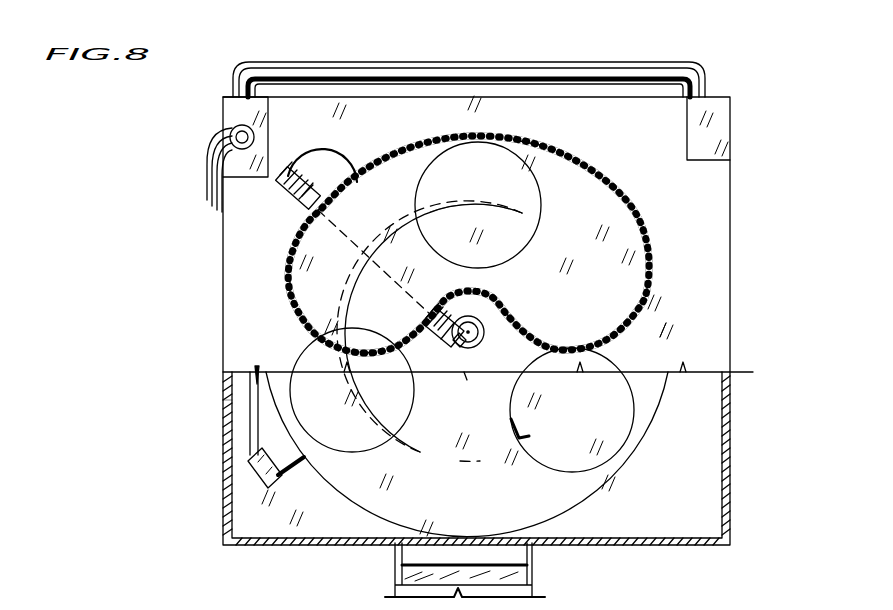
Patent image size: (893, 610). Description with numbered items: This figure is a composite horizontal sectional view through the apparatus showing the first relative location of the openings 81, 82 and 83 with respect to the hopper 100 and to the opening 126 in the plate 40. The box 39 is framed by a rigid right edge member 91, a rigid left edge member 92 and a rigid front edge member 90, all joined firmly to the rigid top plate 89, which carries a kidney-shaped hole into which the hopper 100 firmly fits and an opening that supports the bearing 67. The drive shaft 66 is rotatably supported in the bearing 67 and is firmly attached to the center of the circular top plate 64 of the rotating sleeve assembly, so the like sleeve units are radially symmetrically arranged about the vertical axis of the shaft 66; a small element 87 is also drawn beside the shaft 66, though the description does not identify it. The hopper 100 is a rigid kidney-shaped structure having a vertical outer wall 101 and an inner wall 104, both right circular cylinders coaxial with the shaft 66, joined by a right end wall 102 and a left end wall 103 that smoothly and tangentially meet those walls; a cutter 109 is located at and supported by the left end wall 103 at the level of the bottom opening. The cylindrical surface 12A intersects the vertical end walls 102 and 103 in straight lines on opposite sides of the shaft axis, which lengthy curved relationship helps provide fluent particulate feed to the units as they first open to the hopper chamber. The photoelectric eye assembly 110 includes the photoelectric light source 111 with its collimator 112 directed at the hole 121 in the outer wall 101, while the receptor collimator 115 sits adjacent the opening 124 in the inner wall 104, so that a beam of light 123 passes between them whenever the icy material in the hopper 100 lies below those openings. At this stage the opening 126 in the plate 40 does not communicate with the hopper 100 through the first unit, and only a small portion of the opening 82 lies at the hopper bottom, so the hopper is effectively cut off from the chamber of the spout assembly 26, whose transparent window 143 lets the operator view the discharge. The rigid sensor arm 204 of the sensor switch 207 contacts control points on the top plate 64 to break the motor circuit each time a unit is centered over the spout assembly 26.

The cylindrical surface 12A is at (461, 475).
The spout assembly 26 is at (383, 581).
The box 39 is at (205, 415).
The plate 40 is at (466, 199).
The top plate 64 is at (378, 262).
The drive shaft 66 is at (484, 332).
The bearing 67 is at (458, 348).
The orifice 81 is at (346, 310).
The orifice 82 is at (550, 337).
The orifice 83 is at (542, 220).
The block 87 is at (472, 368).
The top plate 89 is at (665, 264).
The front edge member 90 is at (300, 547).
The right edge member 91 is at (732, 490).
The left edge member 92 is at (222, 451).
The hopper 100 is at (600, 177).
The outer wall 101 is at (542, 151).
The right end wall 102 is at (648, 290).
The left end wall 103 is at (320, 340).
The inner wall 104 is at (504, 312).
The cutter 109 is at (291, 282).
The photoelectric eye assembly 110 is at (297, 168).
The photoelectric light source 111 is at (287, 193).
The collimator 112 is at (305, 201).
The collimator 115 is at (432, 338).
The hole 121 is at (320, 207).
The beam of light 123 is at (356, 249).
The opening 124 is at (437, 312).
The opening 126 is at (560, 418).
The transparent window 143 is at (533, 570).
The sensor arm 204 is at (302, 462).
The sensor switch 207 is at (256, 477).